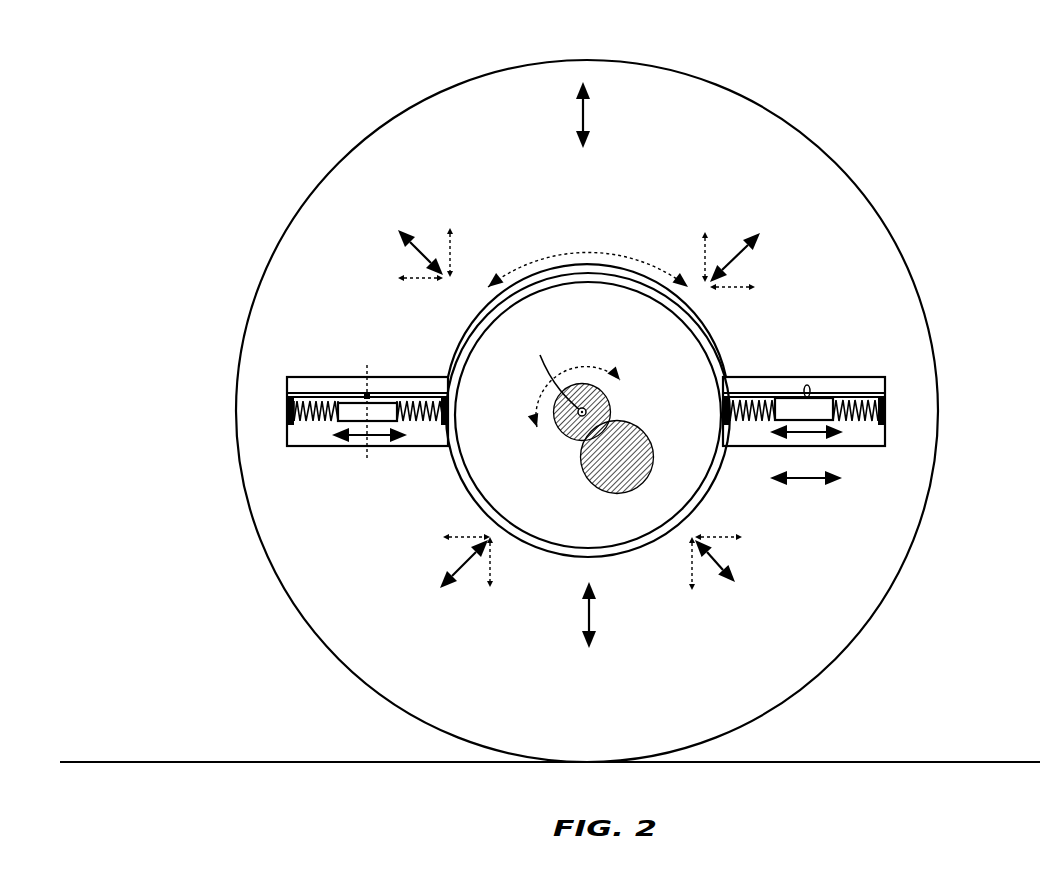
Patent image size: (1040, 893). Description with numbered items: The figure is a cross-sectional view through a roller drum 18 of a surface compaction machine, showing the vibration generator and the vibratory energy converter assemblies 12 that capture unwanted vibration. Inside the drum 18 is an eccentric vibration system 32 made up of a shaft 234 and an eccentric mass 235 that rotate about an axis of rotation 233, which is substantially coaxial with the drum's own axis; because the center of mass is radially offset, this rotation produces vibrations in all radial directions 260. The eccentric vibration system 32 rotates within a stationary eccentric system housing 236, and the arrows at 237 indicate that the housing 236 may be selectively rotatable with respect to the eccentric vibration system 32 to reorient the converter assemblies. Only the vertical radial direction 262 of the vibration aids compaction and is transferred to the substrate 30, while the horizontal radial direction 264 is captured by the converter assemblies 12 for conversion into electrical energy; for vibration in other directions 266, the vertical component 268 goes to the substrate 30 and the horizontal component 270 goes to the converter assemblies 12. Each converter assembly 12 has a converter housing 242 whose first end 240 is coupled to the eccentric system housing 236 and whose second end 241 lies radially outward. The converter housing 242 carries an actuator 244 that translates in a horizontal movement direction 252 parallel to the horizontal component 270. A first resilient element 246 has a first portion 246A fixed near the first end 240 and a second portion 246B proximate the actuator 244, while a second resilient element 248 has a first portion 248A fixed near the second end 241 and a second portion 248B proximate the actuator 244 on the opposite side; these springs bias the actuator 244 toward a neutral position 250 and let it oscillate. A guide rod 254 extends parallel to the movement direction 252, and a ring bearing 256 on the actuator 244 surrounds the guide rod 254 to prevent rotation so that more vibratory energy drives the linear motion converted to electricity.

The vibratory energy converter assembly 12 is at (298, 388).
The drum 18 is at (322, 175).
The substrate 30 is at (297, 762).
The eccentric vibration system 32 is at (622, 275).
The axis of rotation 233 is at (540, 355).
The shaft 234 is at (582, 412).
The eccentric mass 235 is at (640, 430).
The eccentric system housing 236 is at (446, 365).
The selective rotation 237 is at (563, 270).
The first end 240 is at (458, 450).
The second end 241 is at (292, 422).
The converter housing 242 is at (320, 387).
The actuator 244 is at (374, 421).
The first resilient element 246 is at (427, 423).
The first portion of first resilient element 246A is at (445, 448).
The second portion of first resilient element 246B is at (395, 425).
The second resilient element 248 is at (317, 423).
The first portion of second resilient element 248A is at (292, 432).
The second portion of second resilient element 248B is at (335, 425).
The neutral position 250 is at (367, 367).
The horizontal movement direction 252 is at (348, 440).
The guide rod 254 is at (350, 393).
The ring bearing 256 is at (370, 393).
The radial directions 260 is at (595, 598).
The vertical radial direction 262 is at (585, 605).
The horizontal radial direction 264 is at (806, 481).
The other directions 266 is at (740, 252).
The vertical component 268 is at (707, 243).
The horizontal component 270 is at (743, 283).